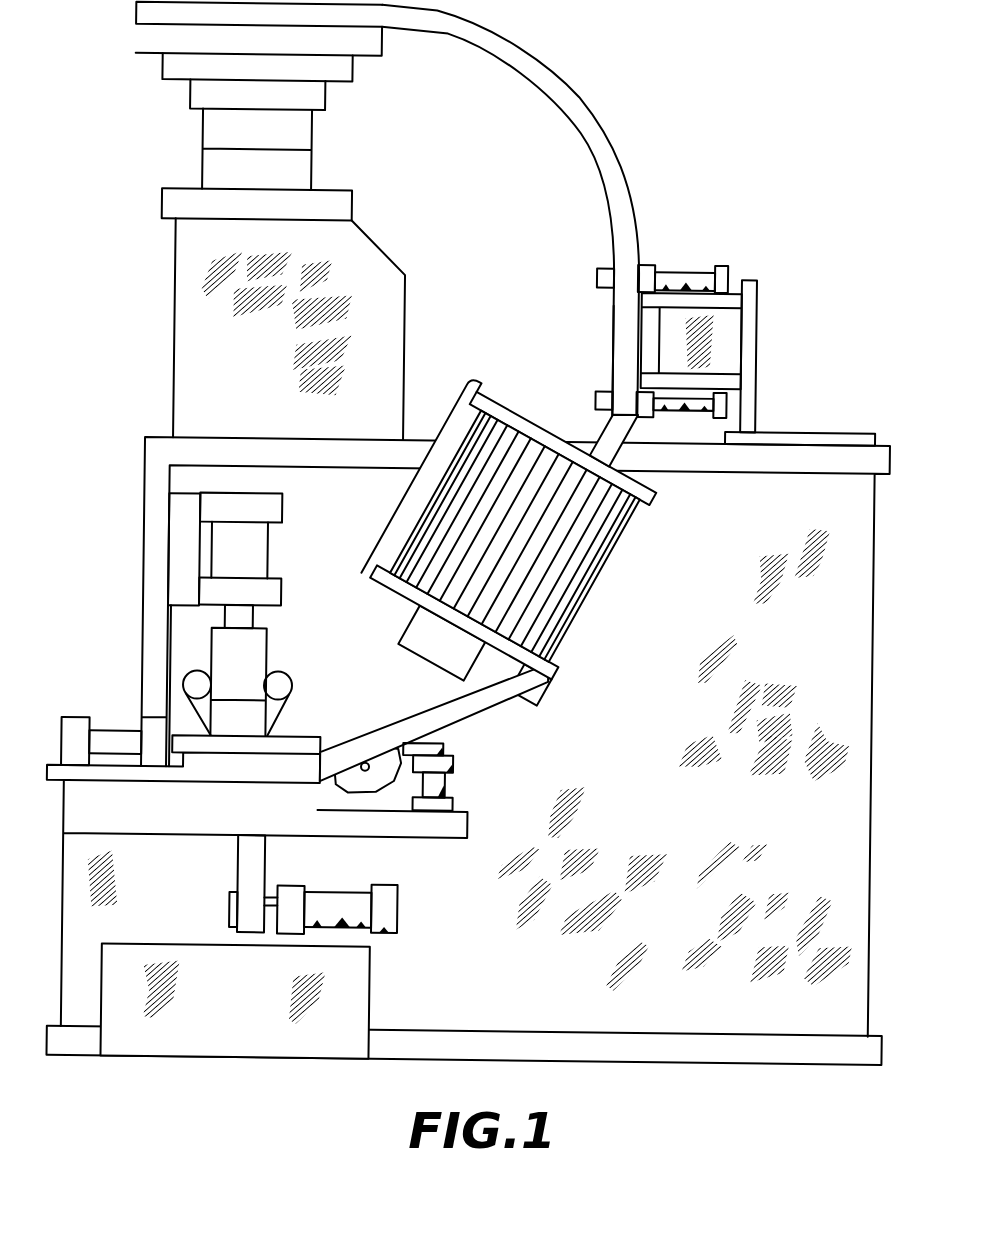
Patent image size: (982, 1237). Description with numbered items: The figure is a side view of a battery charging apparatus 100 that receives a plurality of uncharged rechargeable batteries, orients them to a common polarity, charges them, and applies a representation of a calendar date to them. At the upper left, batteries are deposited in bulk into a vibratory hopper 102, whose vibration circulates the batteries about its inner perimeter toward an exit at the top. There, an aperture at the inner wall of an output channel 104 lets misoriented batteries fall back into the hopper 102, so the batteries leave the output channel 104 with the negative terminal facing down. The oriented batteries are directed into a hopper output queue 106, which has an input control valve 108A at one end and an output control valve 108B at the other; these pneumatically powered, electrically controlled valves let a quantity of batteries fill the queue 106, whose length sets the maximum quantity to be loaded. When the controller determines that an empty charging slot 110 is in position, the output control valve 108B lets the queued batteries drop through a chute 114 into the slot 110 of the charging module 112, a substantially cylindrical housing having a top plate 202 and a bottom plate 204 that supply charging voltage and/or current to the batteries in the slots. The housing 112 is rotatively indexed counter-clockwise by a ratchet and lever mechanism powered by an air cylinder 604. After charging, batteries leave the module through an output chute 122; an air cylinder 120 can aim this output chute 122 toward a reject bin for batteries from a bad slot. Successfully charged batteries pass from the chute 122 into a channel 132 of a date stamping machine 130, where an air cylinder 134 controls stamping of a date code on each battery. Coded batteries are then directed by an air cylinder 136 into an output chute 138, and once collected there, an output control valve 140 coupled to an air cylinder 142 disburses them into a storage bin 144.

The battery charging apparatus 100 is at (789, 83).
The vibratory hopper 102 is at (131, 41).
The output channel 104 is at (546, 66).
The hopper output queue 106 is at (612, 326).
The input control valve 108A is at (595, 272).
The output control valve 108B is at (595, 392).
The charging slot 110 is at (593, 505).
The charging module 112 is at (407, 484).
The chute 114 is at (598, 435).
The air cylinder 120 is at (456, 778).
The output chute 122 is at (483, 690).
The date stamping machine 130 is at (269, 631).
The channel 132 is at (300, 755).
The air cylinder 134 is at (264, 541).
The air cylinder 136 is at (116, 734).
The output chute 138 is at (243, 853).
The output control valve 140 is at (236, 895).
The air cylinder 142 is at (366, 929).
The storage bin 144 is at (377, 975).
The top plate 202 is at (661, 484).
The bottom plate 204 is at (556, 676).
The air cylinder 604 is at (446, 664).